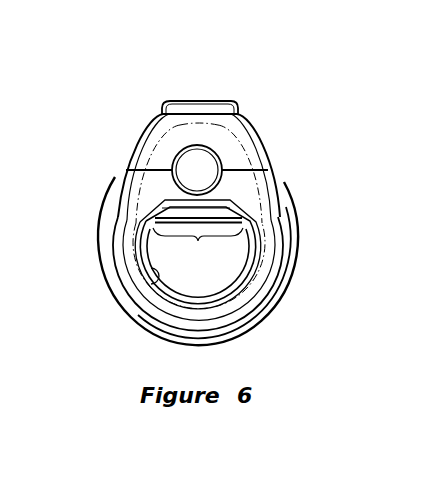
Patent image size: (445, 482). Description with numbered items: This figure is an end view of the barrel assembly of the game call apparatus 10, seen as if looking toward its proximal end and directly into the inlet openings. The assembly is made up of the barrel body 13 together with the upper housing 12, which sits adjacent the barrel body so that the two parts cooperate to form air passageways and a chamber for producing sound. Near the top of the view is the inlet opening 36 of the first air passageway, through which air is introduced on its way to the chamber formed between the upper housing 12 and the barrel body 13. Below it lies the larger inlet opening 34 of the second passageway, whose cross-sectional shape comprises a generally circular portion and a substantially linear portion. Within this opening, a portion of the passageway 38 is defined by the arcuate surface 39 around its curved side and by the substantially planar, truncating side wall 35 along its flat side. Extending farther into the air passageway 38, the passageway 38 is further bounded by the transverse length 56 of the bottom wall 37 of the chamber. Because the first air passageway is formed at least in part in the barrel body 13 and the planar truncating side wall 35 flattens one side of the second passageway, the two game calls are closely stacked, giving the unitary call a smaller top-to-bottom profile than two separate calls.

The game call apparatus 10 is at (130, 95).
The upper housing 12 is at (240, 101).
The barrel body 13 is at (297, 289).
The inlet opening 34 is at (247, 287).
The planar truncating side wall 35 is at (232, 212).
The inlet opening 36 is at (218, 147).
The bottom wall 37 is at (222, 212).
The passageway 38 is at (208, 290).
The arcuate surface 39 is at (158, 289).
The transverse length 56 is at (198, 246).